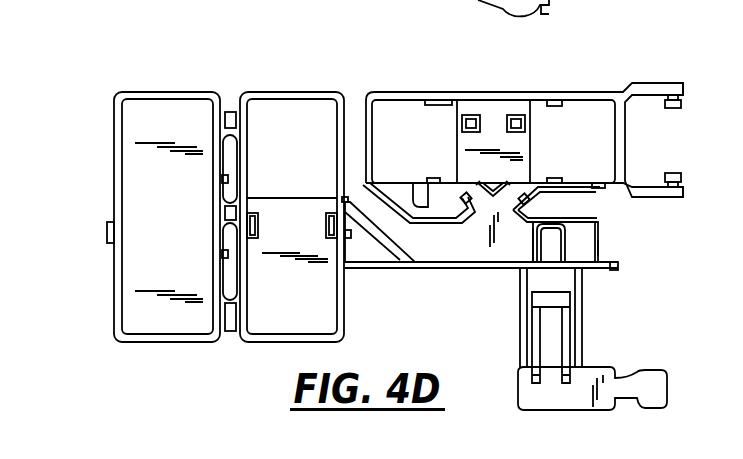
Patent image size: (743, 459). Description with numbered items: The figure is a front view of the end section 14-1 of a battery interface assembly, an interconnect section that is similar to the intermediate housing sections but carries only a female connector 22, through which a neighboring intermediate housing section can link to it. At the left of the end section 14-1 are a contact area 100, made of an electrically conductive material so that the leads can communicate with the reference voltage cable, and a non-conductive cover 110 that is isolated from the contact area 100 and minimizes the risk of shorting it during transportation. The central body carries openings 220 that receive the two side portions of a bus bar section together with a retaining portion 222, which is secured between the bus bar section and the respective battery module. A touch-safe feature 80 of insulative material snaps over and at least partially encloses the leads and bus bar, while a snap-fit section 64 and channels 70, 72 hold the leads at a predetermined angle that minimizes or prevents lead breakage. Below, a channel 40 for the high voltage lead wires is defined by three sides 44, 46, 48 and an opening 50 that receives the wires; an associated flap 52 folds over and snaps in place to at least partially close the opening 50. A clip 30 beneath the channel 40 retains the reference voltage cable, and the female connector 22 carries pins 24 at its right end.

The end section 14-1 is at (407, 205).
The non-conductive cover 110 is at (150, 92).
The contact area 100 is at (287, 212).
The openings 220 is at (419, 117).
The retaining portion 222 is at (503, 110).
The female connector 22 is at (651, 86).
The frame pins 24 is at (673, 108).
The touch-safe feature 80 is at (425, 205).
The snap-fit section 64 is at (467, 196).
The channel 72 is at (529, 196).
The channel 70 is at (452, 187).
The opening 50 is at (481, 289).
The flap 52 is at (536, 228).
The side 44 is at (563, 216).
The channel 40 is at (588, 235).
The side 46 is at (598, 247).
The side 48 is at (618, 268).
The clip 30 is at (562, 323).